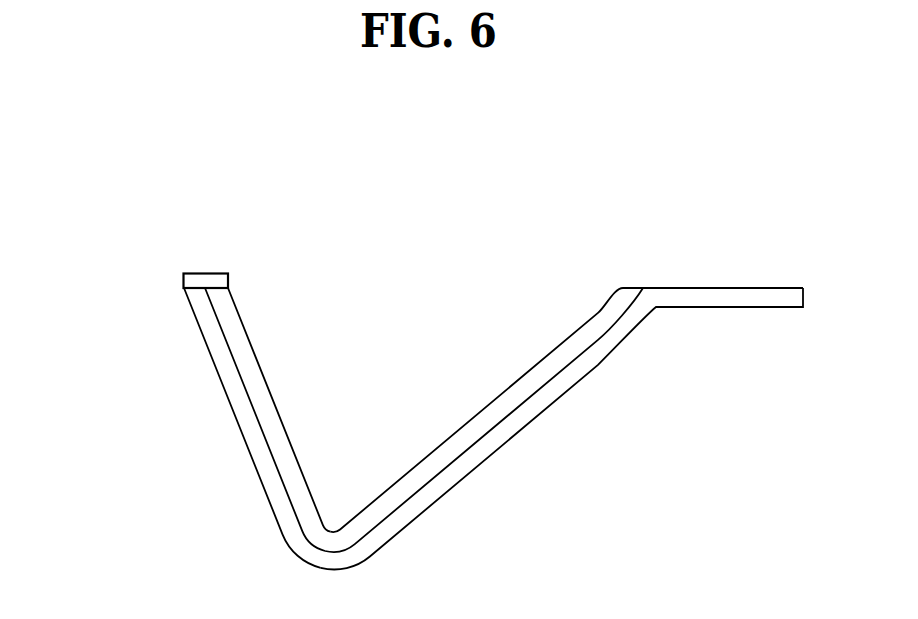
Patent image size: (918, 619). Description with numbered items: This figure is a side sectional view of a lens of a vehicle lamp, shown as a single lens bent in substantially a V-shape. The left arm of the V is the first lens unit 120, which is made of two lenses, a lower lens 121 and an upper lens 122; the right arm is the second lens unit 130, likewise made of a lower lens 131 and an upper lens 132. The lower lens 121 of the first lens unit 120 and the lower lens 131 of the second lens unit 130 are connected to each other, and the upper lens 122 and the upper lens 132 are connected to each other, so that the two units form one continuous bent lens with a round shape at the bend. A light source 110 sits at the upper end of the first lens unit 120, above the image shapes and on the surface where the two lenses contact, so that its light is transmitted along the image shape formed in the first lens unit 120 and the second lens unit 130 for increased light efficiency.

The light source 110 is at (203, 280).
The first lens unit 120 is at (98, 335).
The lower lens 121 is at (208, 335).
The upper lens 122 is at (252, 370).
The second lens unit 130 is at (588, 538).
The lower lens 131 is at (545, 393).
The upper lens 132 is at (490, 417).